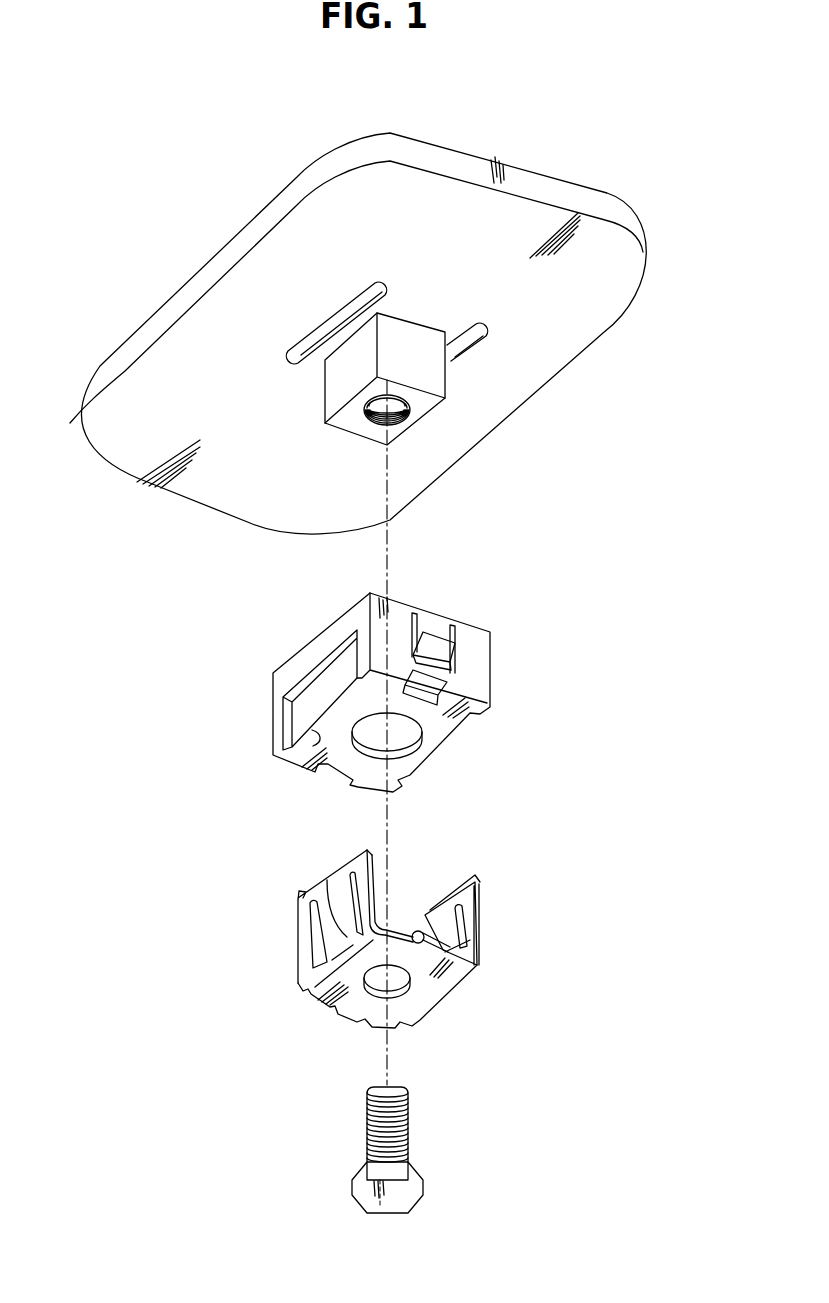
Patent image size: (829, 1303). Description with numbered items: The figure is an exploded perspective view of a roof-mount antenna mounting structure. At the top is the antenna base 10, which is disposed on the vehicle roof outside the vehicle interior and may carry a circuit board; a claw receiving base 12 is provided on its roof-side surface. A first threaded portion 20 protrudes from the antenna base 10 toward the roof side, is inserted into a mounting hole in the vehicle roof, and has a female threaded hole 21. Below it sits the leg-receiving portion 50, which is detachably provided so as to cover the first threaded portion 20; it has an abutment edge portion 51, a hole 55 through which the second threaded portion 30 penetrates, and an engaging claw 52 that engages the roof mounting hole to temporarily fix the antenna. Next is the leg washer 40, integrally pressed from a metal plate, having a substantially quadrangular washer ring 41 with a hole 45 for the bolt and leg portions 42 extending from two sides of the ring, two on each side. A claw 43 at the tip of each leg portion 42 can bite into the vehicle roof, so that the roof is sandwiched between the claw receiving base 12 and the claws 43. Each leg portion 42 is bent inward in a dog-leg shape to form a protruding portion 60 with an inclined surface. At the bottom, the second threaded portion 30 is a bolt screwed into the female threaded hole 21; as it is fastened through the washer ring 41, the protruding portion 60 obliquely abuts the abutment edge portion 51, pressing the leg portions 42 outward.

The antenna base 10 is at (630, 253).
The claw receiving base 12 is at (387, 283).
The first threaded portion 20 is at (342, 385).
The female threaded hole 21 is at (403, 420).
The second threaded portion 30 is at (423, 1180).
The leg washer 40 is at (408, 932).
The washer ring 41 is at (462, 975).
The leg portions 42 is at (377, 887).
The claw 43 is at (475, 875).
The hole 45 is at (398, 980).
The leg-receiving portion 50 is at (370, 692).
The abutment edge portion 51 is at (303, 743).
The engaging claw 52 is at (448, 648).
The hole 55 is at (403, 735).
The protruding portion 60 is at (335, 878).